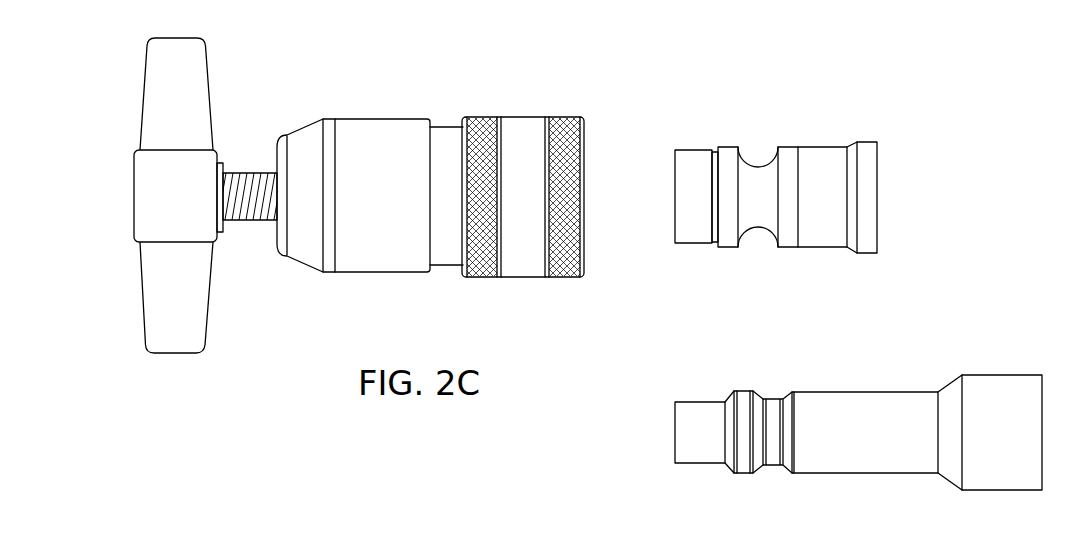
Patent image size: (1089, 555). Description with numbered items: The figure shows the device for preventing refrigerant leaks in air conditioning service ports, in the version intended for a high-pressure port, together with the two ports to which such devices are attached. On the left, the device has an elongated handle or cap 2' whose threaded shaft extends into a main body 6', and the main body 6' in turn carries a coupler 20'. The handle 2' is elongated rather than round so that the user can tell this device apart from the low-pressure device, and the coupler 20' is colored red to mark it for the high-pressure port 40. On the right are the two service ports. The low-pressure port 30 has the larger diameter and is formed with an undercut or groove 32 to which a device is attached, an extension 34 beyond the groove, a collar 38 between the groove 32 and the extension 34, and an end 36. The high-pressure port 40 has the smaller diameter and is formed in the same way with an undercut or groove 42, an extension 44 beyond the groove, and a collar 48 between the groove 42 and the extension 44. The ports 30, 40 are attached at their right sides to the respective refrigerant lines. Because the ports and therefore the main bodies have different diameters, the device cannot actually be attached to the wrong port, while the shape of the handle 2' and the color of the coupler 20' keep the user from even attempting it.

The handle or cap 2' is at (172, 195).
The main body 6' is at (370, 154).
The coupler 20' is at (523, 234).
The low-pressure port 30 is at (778, 163).
The undercut or groove 32 is at (758, 167).
The extension 34 is at (690, 157).
The end 36 is at (675, 185).
The collar 38 is at (728, 148).
The high-pressure port 40 is at (858, 418).
The undercut or groove 42 is at (772, 400).
The extension 44 is at (692, 402).
The collar 48 is at (743, 473).